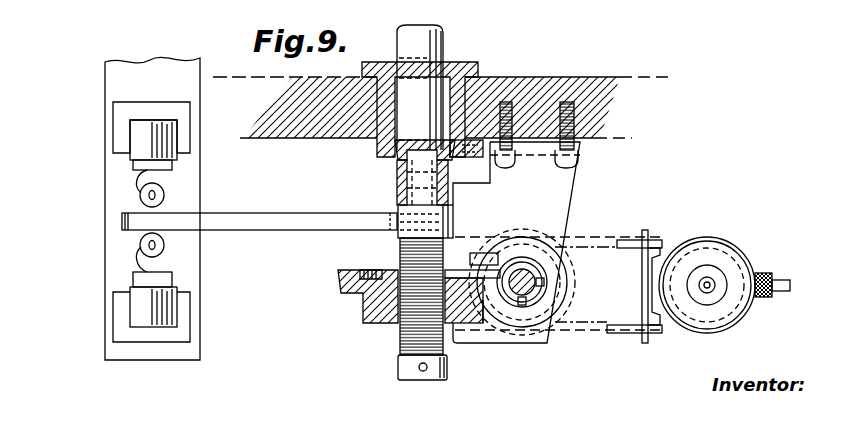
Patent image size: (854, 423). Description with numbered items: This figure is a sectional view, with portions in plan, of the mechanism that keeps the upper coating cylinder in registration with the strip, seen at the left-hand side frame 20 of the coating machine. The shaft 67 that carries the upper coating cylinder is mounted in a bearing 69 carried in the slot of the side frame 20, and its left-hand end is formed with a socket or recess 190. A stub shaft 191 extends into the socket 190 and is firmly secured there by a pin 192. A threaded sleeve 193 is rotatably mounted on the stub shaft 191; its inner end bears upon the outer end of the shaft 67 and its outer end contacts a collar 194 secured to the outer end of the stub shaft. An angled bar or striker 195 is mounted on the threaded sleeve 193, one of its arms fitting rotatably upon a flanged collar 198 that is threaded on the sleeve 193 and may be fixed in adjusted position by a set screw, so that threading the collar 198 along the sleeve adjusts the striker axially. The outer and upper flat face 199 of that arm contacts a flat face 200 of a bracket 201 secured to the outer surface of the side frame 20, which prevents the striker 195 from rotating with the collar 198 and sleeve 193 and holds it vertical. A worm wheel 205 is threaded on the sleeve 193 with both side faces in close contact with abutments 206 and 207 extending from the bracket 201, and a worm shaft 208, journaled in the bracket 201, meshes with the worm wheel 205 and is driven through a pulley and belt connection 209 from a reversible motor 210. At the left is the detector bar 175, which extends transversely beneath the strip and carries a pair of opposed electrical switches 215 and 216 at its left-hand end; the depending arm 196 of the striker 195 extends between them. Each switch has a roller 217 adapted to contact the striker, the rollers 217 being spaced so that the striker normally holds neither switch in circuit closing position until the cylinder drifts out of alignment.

The left-hand side frame 20 is at (562, 96).
The shaft 67 is at (428, 45).
The bearing 69 is at (476, 70).
The detector bar 175 is at (123, 86).
The socket 190 is at (396, 162).
The stub shaft 191 is at (397, 176).
The pin 192 is at (398, 183).
The threaded sleeve 193 is at (398, 252).
The collar 194 is at (406, 372).
The striker 195 is at (263, 204).
The depending arm 196 is at (135, 222).
The flanged collar 198 is at (452, 240).
The flat face 199 is at (451, 227).
The flat face 200 is at (454, 207).
The bracket 201 is at (565, 183).
The worm wheel 205 is at (340, 276).
The abutment 206 is at (510, 233).
The abutment 207 is at (455, 336).
The worm shaft 208 is at (537, 300).
The pulley and belt connection 209 is at (663, 240).
The reversible motor 210 is at (736, 250).
The electrical switch 215 is at (137, 136).
The electrical switch 216 is at (141, 306).
The roller 217 is at (141, 196).